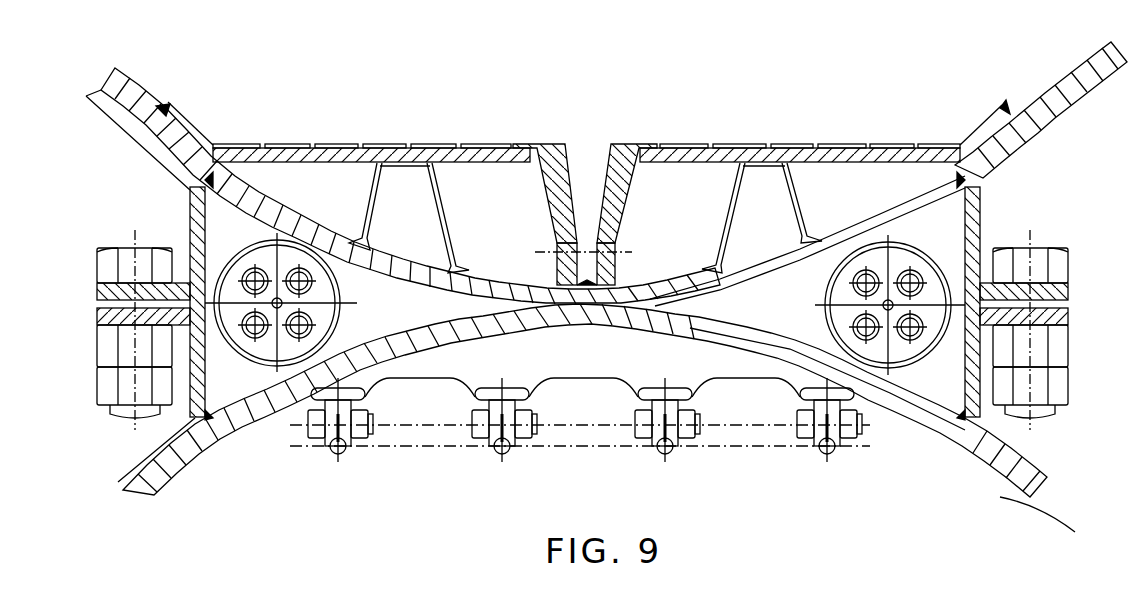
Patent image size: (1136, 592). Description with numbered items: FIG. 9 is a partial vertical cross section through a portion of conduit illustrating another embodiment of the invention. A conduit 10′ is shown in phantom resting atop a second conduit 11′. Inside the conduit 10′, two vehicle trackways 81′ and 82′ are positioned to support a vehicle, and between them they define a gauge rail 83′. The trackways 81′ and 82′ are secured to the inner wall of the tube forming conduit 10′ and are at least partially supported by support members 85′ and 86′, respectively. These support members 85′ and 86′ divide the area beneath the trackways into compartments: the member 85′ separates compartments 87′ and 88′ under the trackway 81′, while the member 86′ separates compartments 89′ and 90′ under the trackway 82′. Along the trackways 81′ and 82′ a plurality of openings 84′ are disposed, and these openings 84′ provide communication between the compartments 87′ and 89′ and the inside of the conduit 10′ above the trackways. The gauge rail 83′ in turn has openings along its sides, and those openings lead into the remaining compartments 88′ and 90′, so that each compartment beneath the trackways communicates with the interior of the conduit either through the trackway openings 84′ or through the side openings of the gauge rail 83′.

The conduit 10′ is at (1002, 148).
The second conduit 11′ is at (1012, 480).
The vehicle trackway 81′ is at (356, 168).
The vehicle trackway 82′ is at (883, 146).
The gauge rail 83′ is at (566, 152).
The openings 84′ is at (303, 144).
The support member 85′ is at (452, 216).
The support member 86′ is at (730, 187).
The compartment 87′ is at (380, 170).
The compartment 88′ is at (464, 167).
The compartment 89′ is at (645, 186).
The compartment 90′ is at (842, 182).